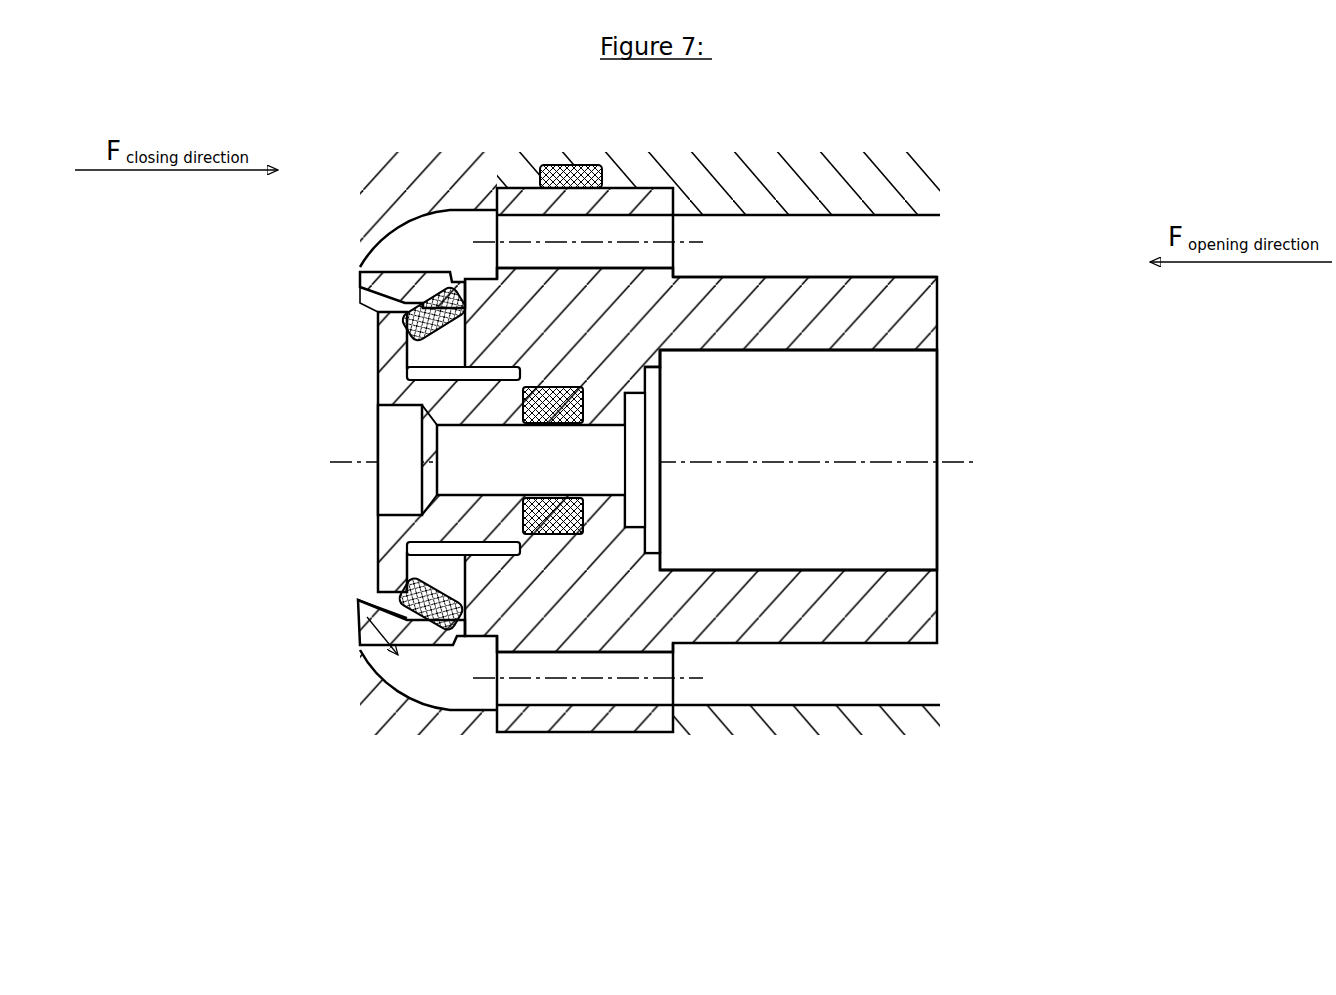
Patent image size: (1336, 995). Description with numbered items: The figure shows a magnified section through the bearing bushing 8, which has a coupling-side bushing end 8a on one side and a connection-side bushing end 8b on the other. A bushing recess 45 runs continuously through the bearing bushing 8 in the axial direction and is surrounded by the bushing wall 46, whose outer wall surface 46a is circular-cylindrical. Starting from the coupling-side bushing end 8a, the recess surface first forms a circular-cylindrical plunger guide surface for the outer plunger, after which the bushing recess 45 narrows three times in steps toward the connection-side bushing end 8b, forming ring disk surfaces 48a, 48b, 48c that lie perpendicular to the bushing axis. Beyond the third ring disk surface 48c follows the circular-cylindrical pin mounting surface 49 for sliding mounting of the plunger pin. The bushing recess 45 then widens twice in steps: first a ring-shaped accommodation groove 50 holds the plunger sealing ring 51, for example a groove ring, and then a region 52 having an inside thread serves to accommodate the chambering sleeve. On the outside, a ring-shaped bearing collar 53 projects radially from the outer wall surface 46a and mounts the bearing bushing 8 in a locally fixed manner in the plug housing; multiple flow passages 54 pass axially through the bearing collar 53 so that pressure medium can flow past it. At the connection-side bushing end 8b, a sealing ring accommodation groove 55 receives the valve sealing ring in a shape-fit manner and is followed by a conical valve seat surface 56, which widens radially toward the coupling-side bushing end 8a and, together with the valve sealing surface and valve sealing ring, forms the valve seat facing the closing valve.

The bearing bushing 8 is at (830, 255).
The coupling-side bushing end 8a is at (980, 612).
The connection-side bushing end 8b is at (343, 355).
The bushing recess 45 is at (808, 492).
The bushing wall 46 is at (793, 320).
The outer wall surface 46a is at (728, 272).
The first ring disk surface 48a is at (665, 359).
The second ring disk surface 48b is at (653, 384).
The third ring disk surface 48c is at (637, 412).
The pin mounting surface 49 is at (600, 490).
The accommodation groove 50 is at (537, 517).
The plunger sealing ring 51 is at (563, 513).
The region having an inside thread 52 is at (465, 535).
The bearing collar 53 is at (618, 205).
The flow passages 54 is at (592, 690).
The sealing ring accommodation groove 55 is at (433, 596).
The valve seat surface 56 is at (449, 281).